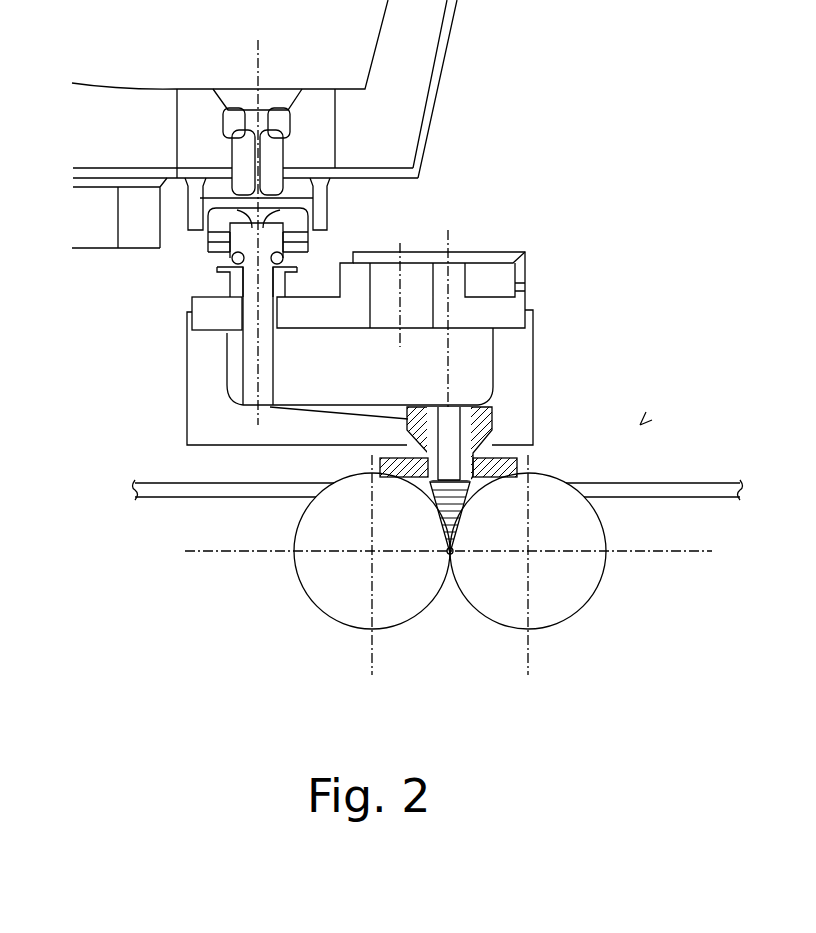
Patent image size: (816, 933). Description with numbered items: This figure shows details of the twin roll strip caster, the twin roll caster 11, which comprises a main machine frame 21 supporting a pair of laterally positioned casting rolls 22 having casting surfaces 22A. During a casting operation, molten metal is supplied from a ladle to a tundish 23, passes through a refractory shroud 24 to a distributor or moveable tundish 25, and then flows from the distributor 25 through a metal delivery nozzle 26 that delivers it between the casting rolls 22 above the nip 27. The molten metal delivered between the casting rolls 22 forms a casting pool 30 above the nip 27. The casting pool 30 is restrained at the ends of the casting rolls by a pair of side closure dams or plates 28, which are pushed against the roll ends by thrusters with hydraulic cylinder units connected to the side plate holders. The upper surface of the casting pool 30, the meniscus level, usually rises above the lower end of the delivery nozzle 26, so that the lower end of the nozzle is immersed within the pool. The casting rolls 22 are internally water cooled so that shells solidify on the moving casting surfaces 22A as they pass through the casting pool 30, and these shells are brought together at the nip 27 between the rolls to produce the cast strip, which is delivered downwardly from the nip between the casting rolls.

The twin roll caster 11 is at (641, 424).
The main machine frame 21 is at (665, 485).
The casting rolls 22 is at (308, 598).
The casting surfaces 22A is at (427, 495).
The tundish 23 is at (428, 135).
The refractory shroud 24 is at (272, 347).
The distributor 25 is at (186, 366).
The metal delivery nozzle 26 is at (517, 458).
The nip 27 is at (452, 547).
The side closure dams 28 is at (380, 480).
The casting pool 30 is at (435, 530).